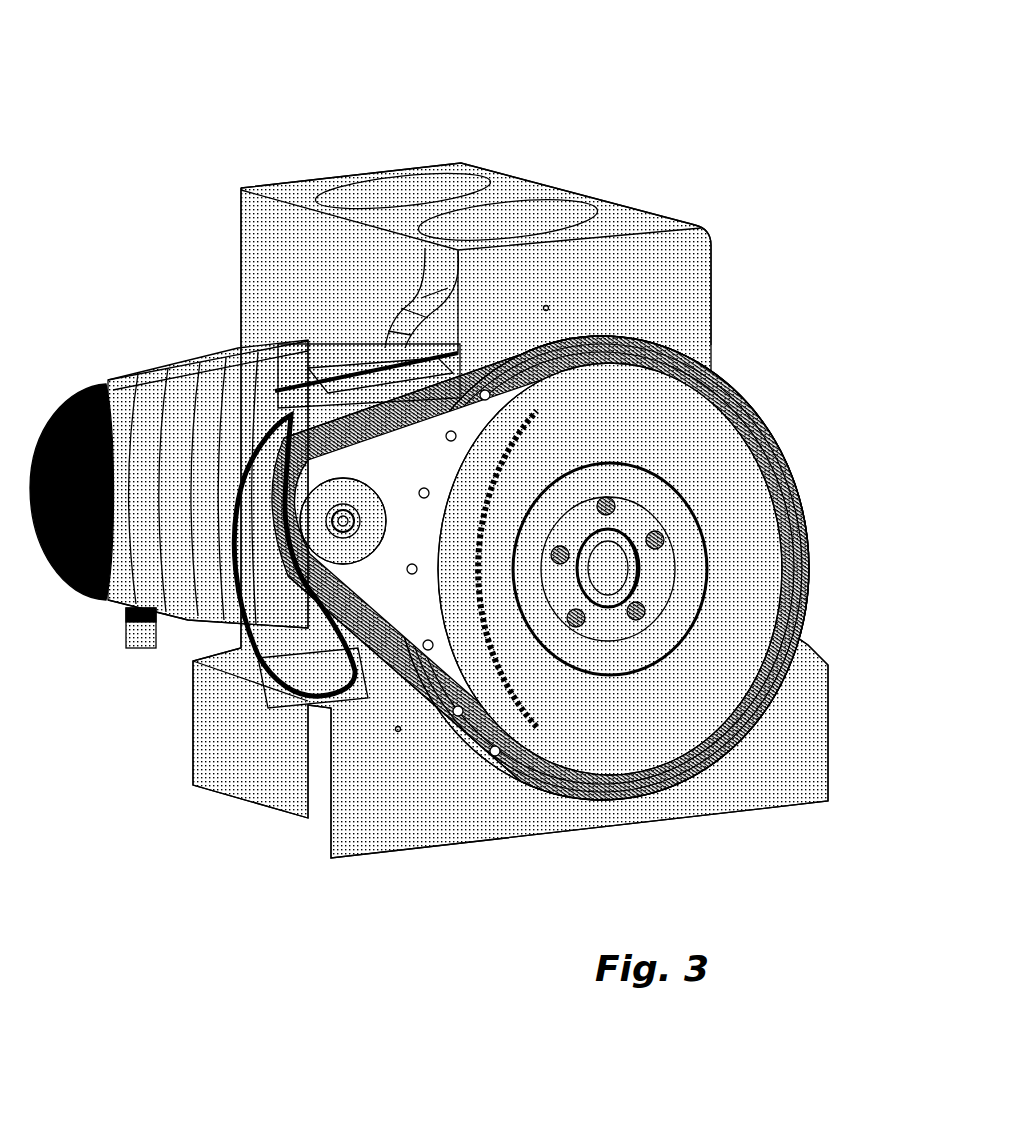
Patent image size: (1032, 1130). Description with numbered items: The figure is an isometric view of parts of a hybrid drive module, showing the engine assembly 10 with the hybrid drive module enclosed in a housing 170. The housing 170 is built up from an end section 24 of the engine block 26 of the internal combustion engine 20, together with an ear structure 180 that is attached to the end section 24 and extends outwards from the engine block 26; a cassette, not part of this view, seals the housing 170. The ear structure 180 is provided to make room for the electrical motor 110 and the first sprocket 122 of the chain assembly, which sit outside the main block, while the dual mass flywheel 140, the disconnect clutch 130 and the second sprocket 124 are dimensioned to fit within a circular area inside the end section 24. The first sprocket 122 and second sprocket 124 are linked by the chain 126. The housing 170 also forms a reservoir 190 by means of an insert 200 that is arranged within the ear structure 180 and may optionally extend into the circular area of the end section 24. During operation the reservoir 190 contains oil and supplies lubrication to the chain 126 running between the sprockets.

The engine assembly 10 is at (533, 437).
The internal combustion engine 20 is at (533, 437).
The end section 24 is at (580, 128).
The engine block 26 is at (533, 437).
The electrical motor 110 is at (169, 519).
The first sprocket 122 is at (280, 598).
The second sprocket 124 is at (653, 727).
The chain 126 is at (527, 760).
The disconnect clutch 130 is at (609, 617).
The dual mass flywheel 140 is at (609, 617).
The housing 170 is at (609, 617).
The ear structure 180 is at (383, 340).
The reservoir 190 is at (270, 682).
The insert 200 is at (240, 415).